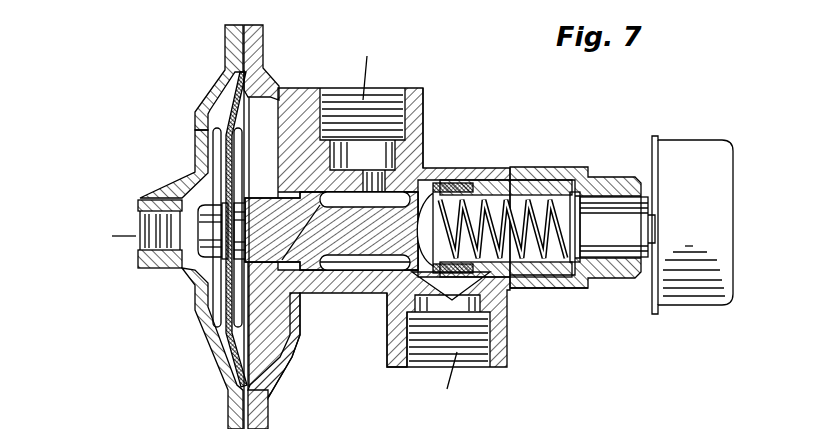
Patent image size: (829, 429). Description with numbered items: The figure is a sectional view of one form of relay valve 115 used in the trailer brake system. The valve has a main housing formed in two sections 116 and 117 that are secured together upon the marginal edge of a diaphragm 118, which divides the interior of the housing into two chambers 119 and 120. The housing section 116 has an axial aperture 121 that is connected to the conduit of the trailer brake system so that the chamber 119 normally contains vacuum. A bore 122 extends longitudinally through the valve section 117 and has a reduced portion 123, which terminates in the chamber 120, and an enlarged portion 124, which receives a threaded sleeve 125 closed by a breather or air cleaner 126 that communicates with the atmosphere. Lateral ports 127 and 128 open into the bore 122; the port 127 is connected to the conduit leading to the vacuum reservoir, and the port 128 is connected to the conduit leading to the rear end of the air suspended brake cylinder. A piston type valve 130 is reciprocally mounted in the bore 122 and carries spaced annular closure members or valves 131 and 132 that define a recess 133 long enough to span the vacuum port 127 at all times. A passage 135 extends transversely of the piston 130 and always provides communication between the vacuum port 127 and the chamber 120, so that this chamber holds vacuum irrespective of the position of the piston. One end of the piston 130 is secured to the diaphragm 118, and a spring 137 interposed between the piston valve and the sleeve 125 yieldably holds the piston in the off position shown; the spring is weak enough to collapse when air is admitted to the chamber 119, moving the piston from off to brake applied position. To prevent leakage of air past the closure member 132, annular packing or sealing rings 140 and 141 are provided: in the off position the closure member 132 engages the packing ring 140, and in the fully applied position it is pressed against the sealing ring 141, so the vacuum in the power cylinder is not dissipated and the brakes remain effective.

The relay valve 115 is at (205, 84).
The valve housing section 116 is at (193, 109).
The valve housing section 117 is at (543, 166).
The diaphragm 118 is at (232, 115).
The chamber 119 is at (222, 342).
The chamber 120 is at (265, 372).
The axial aperture 121 is at (140, 262).
The bore 122 is at (460, 163).
The reduced portion of bore 123 is at (367, 262).
The enlarged portion of bore 124 is at (478, 170).
The threaded sleeve 125 is at (582, 290).
The breather or air cleaner 126 is at (690, 285).
The vacuum port 127 is at (423, 130).
The port 128 is at (483, 305).
The piston type valve 130 is at (348, 260).
The annular closure member 131 is at (318, 265).
The annular closure member 132 is at (400, 293).
The recess 133 is at (365, 200).
The passage 135 is at (268, 265).
The spring 137 is at (542, 290).
The packing ring 140 is at (398, 275).
The sealing ring 141 is at (490, 181).